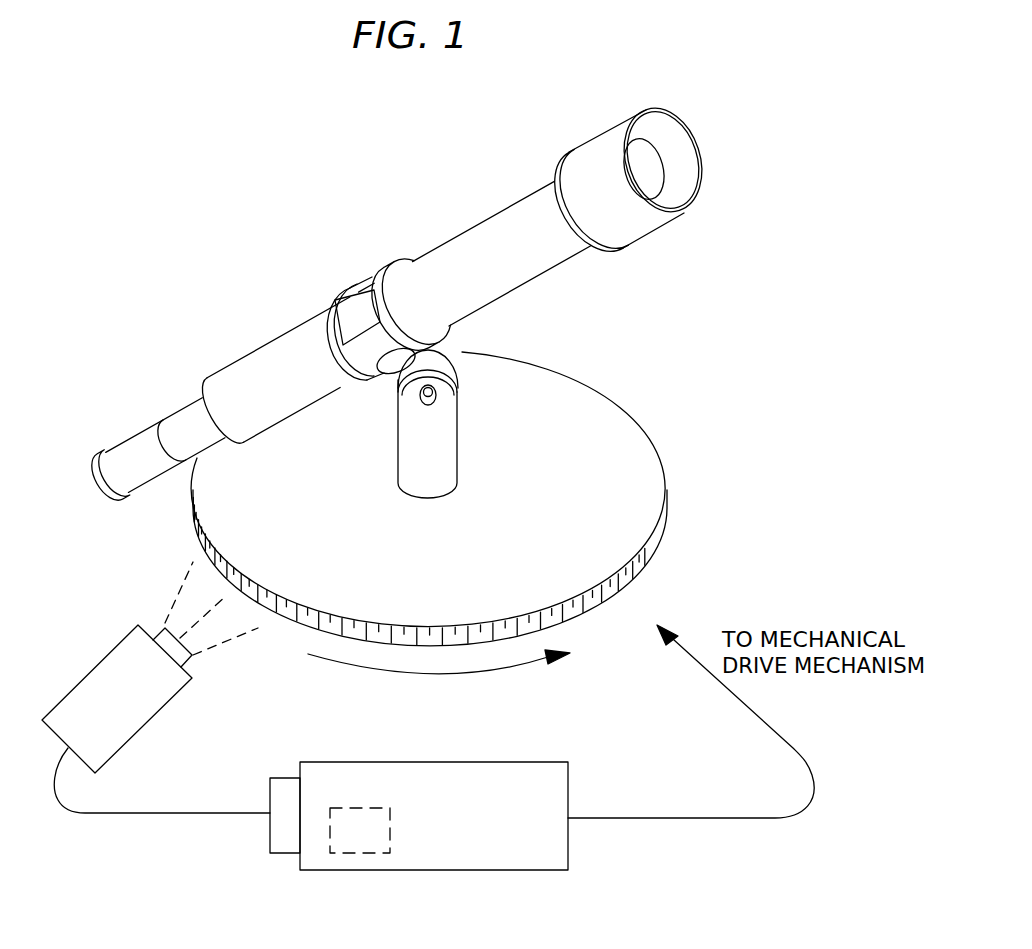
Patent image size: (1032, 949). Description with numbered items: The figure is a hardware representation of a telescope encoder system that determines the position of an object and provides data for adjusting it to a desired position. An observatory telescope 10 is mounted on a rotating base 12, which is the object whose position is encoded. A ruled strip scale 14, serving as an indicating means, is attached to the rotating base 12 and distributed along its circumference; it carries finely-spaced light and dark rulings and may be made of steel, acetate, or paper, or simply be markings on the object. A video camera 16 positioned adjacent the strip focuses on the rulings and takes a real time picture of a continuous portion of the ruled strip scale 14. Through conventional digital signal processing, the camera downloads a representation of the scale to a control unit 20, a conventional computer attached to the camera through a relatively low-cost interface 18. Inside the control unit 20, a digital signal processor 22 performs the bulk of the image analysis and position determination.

The observatory telescope 10 is at (489, 227).
The rotating base 12 is at (600, 420).
The ruled strip scale 14 is at (193, 527).
The video camera 16 is at (99, 668).
The interface 18 is at (283, 843).
The control unit 20 is at (447, 768).
The digital signal processor 22 is at (378, 843).